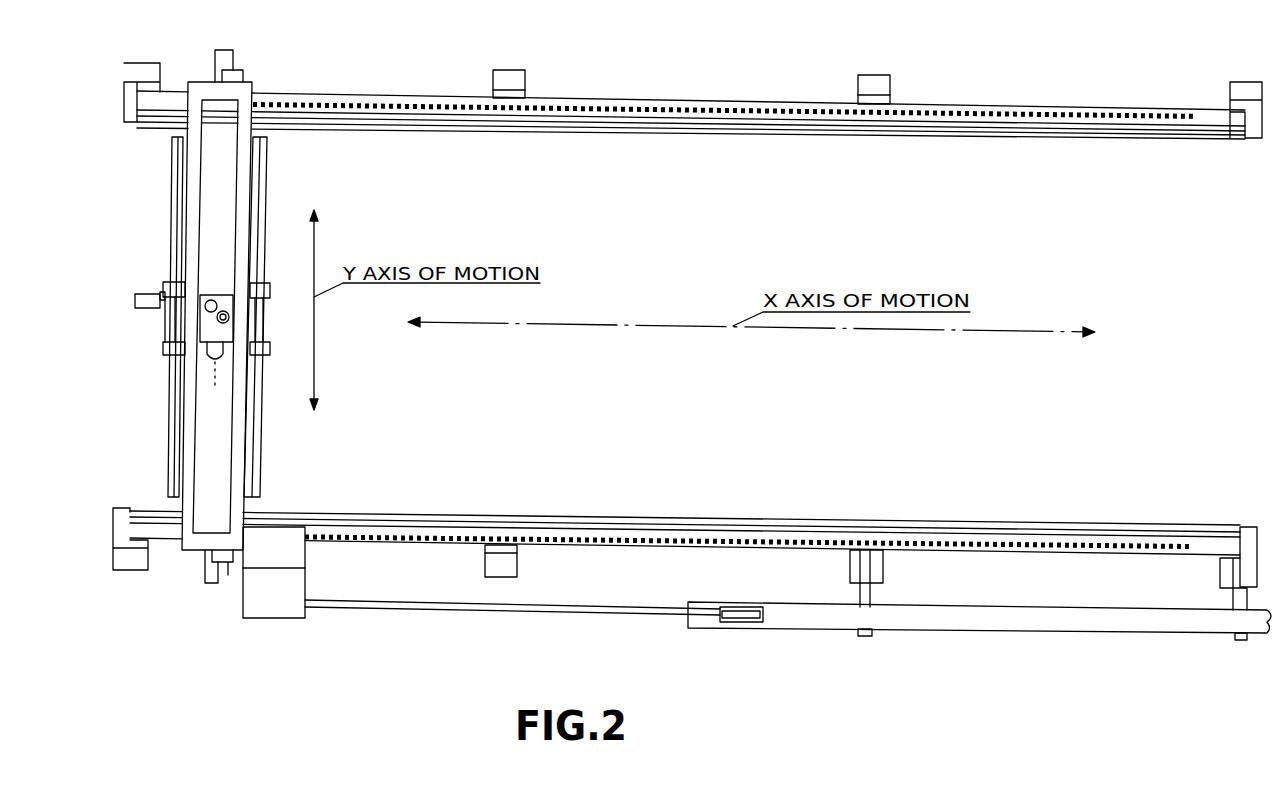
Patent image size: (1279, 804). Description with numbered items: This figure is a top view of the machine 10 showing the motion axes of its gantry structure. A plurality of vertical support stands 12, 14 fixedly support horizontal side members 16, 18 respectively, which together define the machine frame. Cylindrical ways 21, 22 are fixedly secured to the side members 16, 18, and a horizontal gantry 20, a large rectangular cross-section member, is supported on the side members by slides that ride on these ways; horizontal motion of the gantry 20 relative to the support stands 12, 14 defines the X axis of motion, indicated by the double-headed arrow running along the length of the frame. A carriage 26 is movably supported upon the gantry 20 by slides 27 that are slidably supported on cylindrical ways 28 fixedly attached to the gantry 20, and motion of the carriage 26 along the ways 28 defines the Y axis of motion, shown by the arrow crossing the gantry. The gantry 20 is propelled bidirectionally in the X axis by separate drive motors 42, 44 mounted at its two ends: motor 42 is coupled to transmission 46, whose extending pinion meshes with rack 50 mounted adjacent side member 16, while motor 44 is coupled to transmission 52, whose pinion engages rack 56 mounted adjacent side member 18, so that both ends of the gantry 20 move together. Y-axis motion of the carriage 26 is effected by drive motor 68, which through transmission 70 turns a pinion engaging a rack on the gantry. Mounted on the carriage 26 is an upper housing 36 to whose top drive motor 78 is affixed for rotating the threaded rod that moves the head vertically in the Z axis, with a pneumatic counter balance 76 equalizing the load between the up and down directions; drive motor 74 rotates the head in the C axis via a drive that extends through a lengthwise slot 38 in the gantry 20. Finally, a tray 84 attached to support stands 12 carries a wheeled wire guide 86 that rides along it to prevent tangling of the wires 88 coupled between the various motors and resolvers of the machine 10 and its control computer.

The machine 10 is at (466, 683).
The vertical support stands 12 is at (506, 578).
The vertical support stands 14 is at (140, 62).
The horizontal side member 16 is at (690, 552).
The horizontal side member 18 is at (705, 131).
The gantry 20 is at (246, 202).
The cylindrical way 21 is at (560, 520).
The cylindrical way 22 is at (637, 123).
The carriage 26 is at (158, 338).
The slides 27 is at (172, 288).
The cylindrical ways 28 is at (265, 381).
The upper housing 36 is at (233, 333).
The lengthwise slot 38 is at (233, 240).
The drive motor 42 is at (205, 585).
The drive motor 44 is at (233, 56).
The transmission 46 is at (228, 575).
The rack 50 is at (415, 538).
The transmission 52 is at (243, 74).
The rack 56 is at (362, 103).
The drive motor 68 is at (140, 304).
The transmission 70 is at (160, 296).
The drive motor 74 is at (230, 318).
The pneumatic counter balance 76 is at (218, 378).
The drive motor 78 is at (212, 300).
The tray 84 is at (1010, 620).
The wheeled wire guide 86 is at (740, 623).
The wires 88 is at (556, 612).